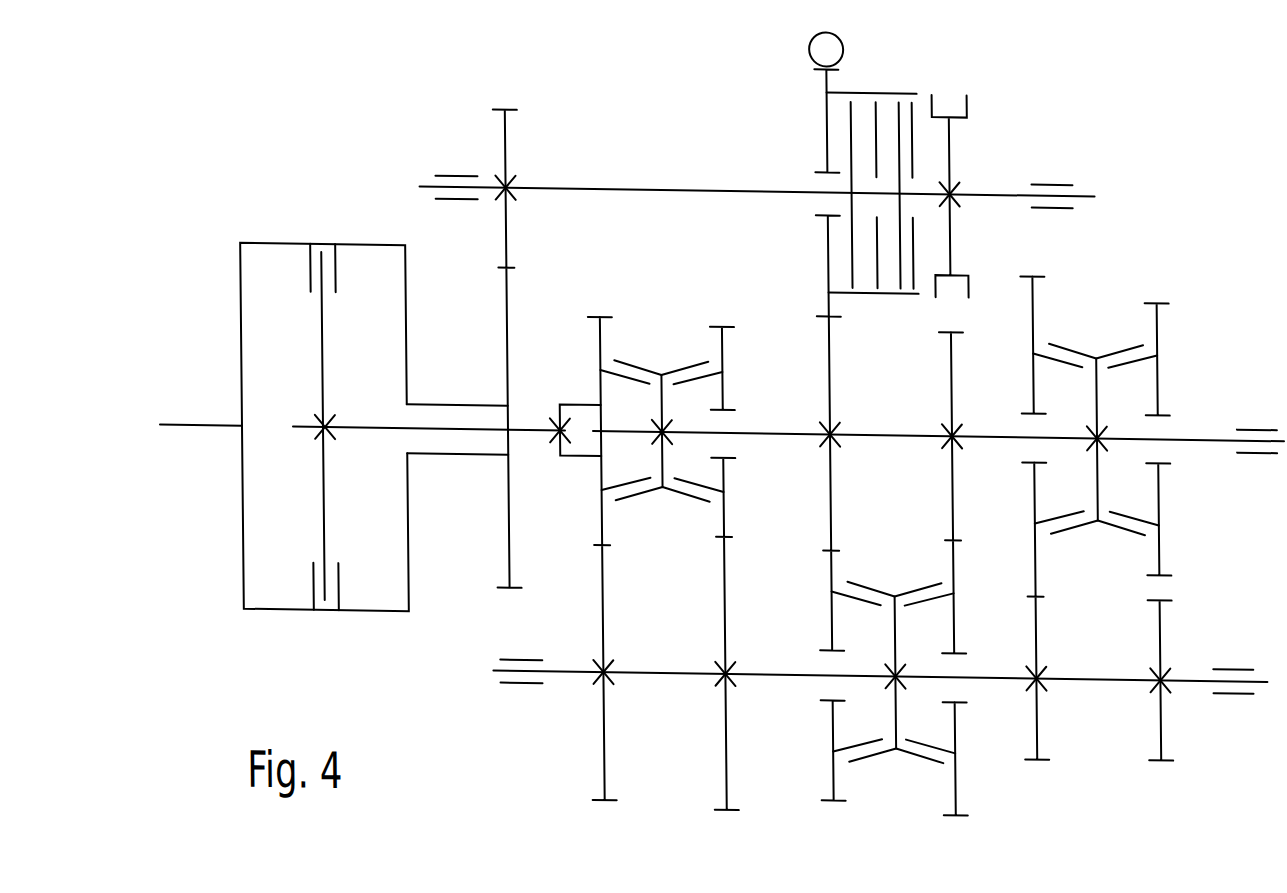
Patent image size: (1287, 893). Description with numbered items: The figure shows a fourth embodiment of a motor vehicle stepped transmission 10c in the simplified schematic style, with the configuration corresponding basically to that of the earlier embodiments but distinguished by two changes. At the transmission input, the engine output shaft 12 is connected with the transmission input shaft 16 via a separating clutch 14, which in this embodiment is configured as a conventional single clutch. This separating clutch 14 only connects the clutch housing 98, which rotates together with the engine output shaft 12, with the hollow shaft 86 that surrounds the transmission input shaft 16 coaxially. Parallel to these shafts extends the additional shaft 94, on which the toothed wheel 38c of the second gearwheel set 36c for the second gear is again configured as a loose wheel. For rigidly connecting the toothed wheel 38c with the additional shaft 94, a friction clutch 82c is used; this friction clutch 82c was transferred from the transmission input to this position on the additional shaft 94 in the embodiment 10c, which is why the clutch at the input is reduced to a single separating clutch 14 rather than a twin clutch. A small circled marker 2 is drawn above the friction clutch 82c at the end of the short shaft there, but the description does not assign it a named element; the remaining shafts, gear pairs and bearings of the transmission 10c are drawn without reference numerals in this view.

The transmission 10c is at (1076, 122).
The engine output shaft 12 is at (185, 432).
The separating clutch 14 is at (324, 525).
The transmission input shaft 16 is at (437, 432).
The second gearwheel set 36c is at (799, 296).
The toothed wheel 38c is at (831, 133).
The friction clutch 82c is at (912, 86).
The hollow shaft 86 is at (481, 383).
The additional shaft 94 is at (688, 190).
The clutch housing 98 is at (276, 250).
The connection point 2 is at (826, 49).